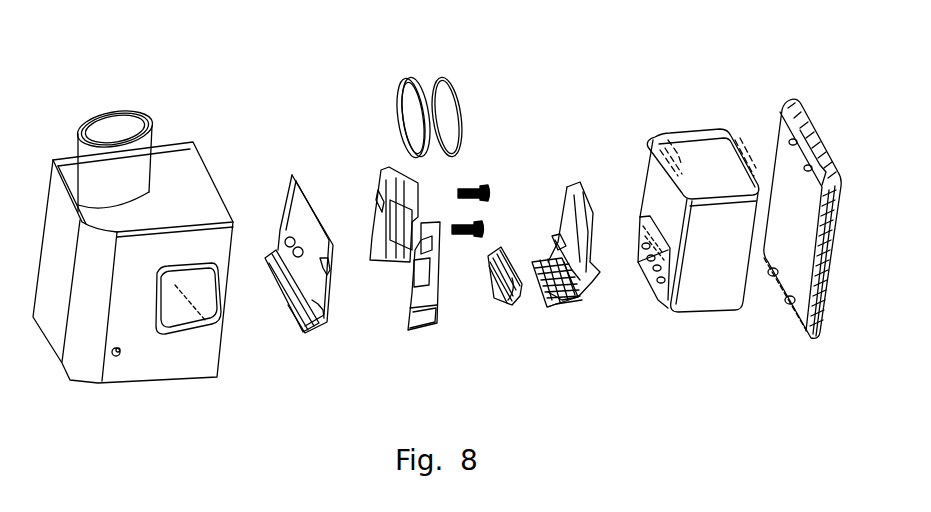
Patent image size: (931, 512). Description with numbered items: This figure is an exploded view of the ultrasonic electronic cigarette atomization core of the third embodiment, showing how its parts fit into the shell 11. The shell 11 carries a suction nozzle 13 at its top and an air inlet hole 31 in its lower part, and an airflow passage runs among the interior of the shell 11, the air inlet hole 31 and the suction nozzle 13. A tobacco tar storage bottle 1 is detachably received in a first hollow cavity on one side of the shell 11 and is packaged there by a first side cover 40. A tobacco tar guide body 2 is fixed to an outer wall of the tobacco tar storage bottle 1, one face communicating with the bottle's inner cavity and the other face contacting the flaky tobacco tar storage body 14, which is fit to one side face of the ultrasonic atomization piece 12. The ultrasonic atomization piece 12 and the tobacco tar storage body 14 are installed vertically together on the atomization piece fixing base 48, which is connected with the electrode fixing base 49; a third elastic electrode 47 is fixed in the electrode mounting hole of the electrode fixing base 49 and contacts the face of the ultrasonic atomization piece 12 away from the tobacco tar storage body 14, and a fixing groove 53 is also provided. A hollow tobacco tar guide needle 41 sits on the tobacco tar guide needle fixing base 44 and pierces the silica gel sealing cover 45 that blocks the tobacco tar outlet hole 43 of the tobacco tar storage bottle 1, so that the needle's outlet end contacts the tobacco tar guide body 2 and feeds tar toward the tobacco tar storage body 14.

The tobacco tar storage bottle 1 is at (690, 140).
The tobacco tar guide body 2 is at (505, 253).
The shell 11 is at (190, 158).
The ultrasonic atomization piece 12 is at (408, 83).
The suction nozzle 13 is at (82, 153).
The tobacco tar storage body 14 is at (448, 88).
The air inlet hole 31 is at (112, 358).
The first side cover 40 is at (802, 100).
The tobacco tar guide needle 41 is at (588, 283).
The tobacco tar outlet hole 43 is at (640, 267).
The tobacco tar guide needle fixing base 44 is at (573, 190).
The sealing cover 45 is at (660, 290).
The third elastic electrode 47 is at (287, 285).
The atomization piece fixing base 48 is at (377, 195).
The electrode fixing base 49 is at (297, 172).
The fixing groove 53 is at (390, 262).